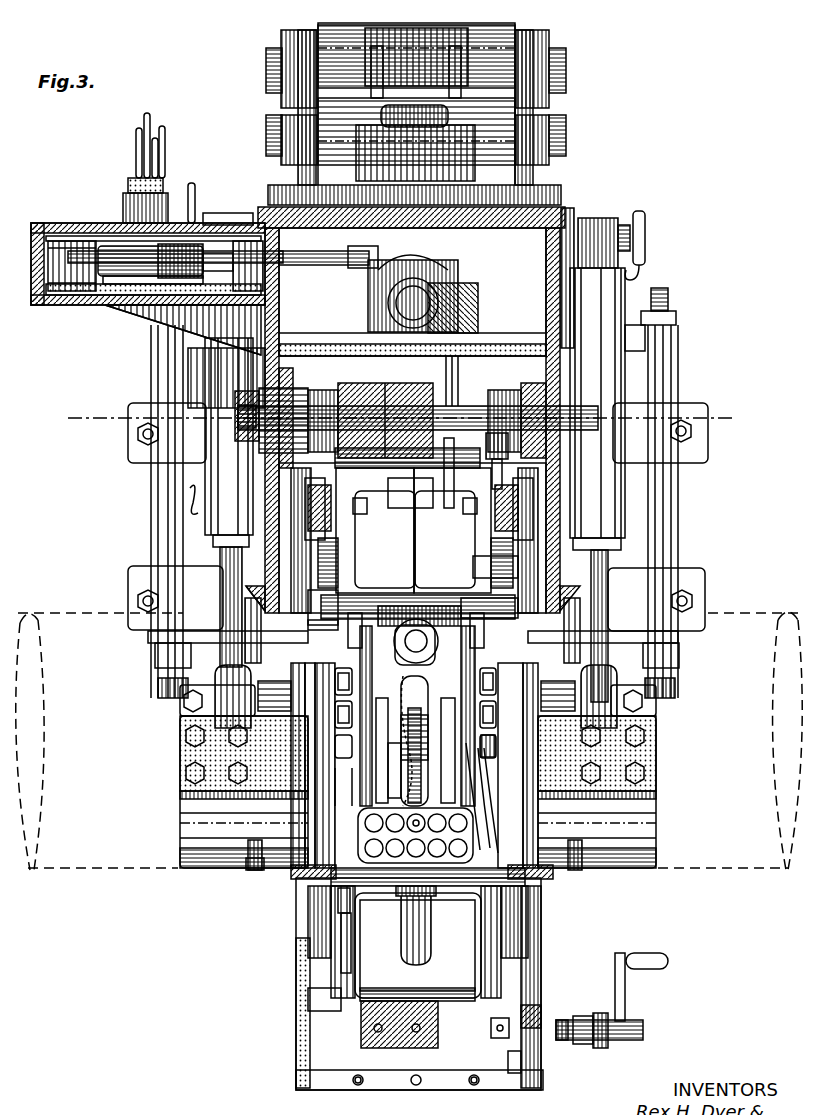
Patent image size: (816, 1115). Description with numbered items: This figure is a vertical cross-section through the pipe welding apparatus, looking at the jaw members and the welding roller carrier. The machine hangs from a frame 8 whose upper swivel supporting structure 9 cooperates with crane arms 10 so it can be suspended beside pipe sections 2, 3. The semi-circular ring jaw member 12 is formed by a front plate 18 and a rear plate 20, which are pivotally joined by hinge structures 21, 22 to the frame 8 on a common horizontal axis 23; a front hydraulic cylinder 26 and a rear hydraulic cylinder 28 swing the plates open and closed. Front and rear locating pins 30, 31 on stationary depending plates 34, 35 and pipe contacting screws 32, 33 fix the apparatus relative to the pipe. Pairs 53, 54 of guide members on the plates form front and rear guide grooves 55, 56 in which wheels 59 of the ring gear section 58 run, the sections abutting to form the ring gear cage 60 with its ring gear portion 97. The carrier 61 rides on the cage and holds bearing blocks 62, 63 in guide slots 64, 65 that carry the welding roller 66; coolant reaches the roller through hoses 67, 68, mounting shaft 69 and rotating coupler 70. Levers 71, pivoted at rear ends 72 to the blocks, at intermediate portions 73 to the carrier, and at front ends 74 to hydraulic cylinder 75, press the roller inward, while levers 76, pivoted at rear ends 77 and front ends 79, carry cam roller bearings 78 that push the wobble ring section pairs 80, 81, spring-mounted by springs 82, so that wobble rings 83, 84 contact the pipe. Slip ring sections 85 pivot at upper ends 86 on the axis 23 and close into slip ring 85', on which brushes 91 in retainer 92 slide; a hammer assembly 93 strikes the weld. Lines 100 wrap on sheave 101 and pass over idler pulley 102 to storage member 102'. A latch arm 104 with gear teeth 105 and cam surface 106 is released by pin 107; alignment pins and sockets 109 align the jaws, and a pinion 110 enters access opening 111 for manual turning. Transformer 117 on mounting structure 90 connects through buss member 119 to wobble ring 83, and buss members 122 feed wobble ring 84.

The pipe section 2 is at (70, 862).
The pipe section 3 is at (750, 862).
The frame 8 is at (560, 205).
The upper swivel supporting structure 9 is at (520, 168).
The crane arms 10 is at (505, 128).
The ring jaw member 12 is at (288, 1016).
The front plate 18 is at (288, 1063).
The rear plate 20 is at (533, 1062).
The hinge structure 21 is at (300, 385).
The hinge structure 22 is at (513, 392).
The common horizontal axis 23 is at (722, 410).
The front hydraulic cylinder 26 is at (200, 445).
The rear hydraulic cylinder 28 is at (612, 440).
The front locating pins 30 is at (245, 650).
The rear locating pins 31 is at (603, 650).
The front pipe section contacting screws 32 is at (245, 872).
The rear pipe section contacting screws 33 is at (575, 872).
The front depending plate 34 is at (262, 562).
The rear depending plate 35 is at (560, 562).
The pair of semi-circular separable guide members 53 is at (318, 522).
The pair of semi-circular separable guide members 54 is at (490, 522).
The front track circular guide groove 55 is at (340, 507).
The rear track circular guide groove 56 is at (495, 492).
The second semi-circular ring gear section 58 is at (343, 938).
The bearings or wheels 59 is at (312, 480).
The ring gear cage 60 is at (480, 557).
The carrier 61 is at (445, 675).
The slidable bearing block 62 is at (366, 808).
The slidable bearing block 63 is at (413, 770).
The guide slot 64 is at (382, 698).
The guide slot 65 is at (445, 700).
The welding roller 66 is at (408, 710).
The hose 67 is at (490, 800).
The hose 68 is at (496, 812).
The mounting shaft 69 is at (393, 768).
The rotating coupler 70 is at (487, 730).
The levers 71 is at (364, 652).
The rear ends of levers 72 is at (327, 665).
The intermediate portions of levers 73 is at (488, 700).
The front ends of levers 74 is at (408, 612).
The hydraulic cylinder 75 is at (412, 600).
The levers 76 is at (476, 640).
The rear ends of levers 77 is at (312, 828).
The cam roller bearings 78 is at (520, 692).
The front ends of levers 79 is at (340, 628).
The pair of semi-circular contact wobble ring sections 80 is at (303, 814).
The pair of semi-circular contact wobble ring sections 81 is at (512, 826).
The springs 82 is at (305, 917).
The contact wobble ring 83 is at (378, 587).
The contact wobble ring 84 is at (455, 592).
The semi-circular slip ring sections 85 is at (379, 1035).
The slip ring 85' is at (410, 509).
The upper ends of slip ring sections 86 is at (355, 378).
The mounting structure 90 is at (685, 577).
The spring-loaded brushes 91 is at (410, 812).
The retainer 92 is at (418, 890).
The reciprocating hammer assembly 93 is at (415, 925).
The ring gear portion 97 is at (490, 445).
The air and hydraulic lines 100 is at (452, 357).
The sheave 101 is at (446, 447).
The idler pulley 102 is at (394, 289).
The spring loaded rotary base storage and coupling member 102' is at (157, 209).
The arm 104 is at (462, 1092).
The gear teeth 105 is at (520, 1042).
The cam surface 106 is at (505, 1082).
The pin 107 is at (515, 1084).
The alignment pins and sockets 109 is at (617, 1012).
The pinion 110 is at (575, 1008).
The access opening 111 is at (553, 1012).
The transformer 117 is at (150, 505).
The flexible buss member 119 is at (185, 842).
The flexible buss members 122 is at (632, 845).